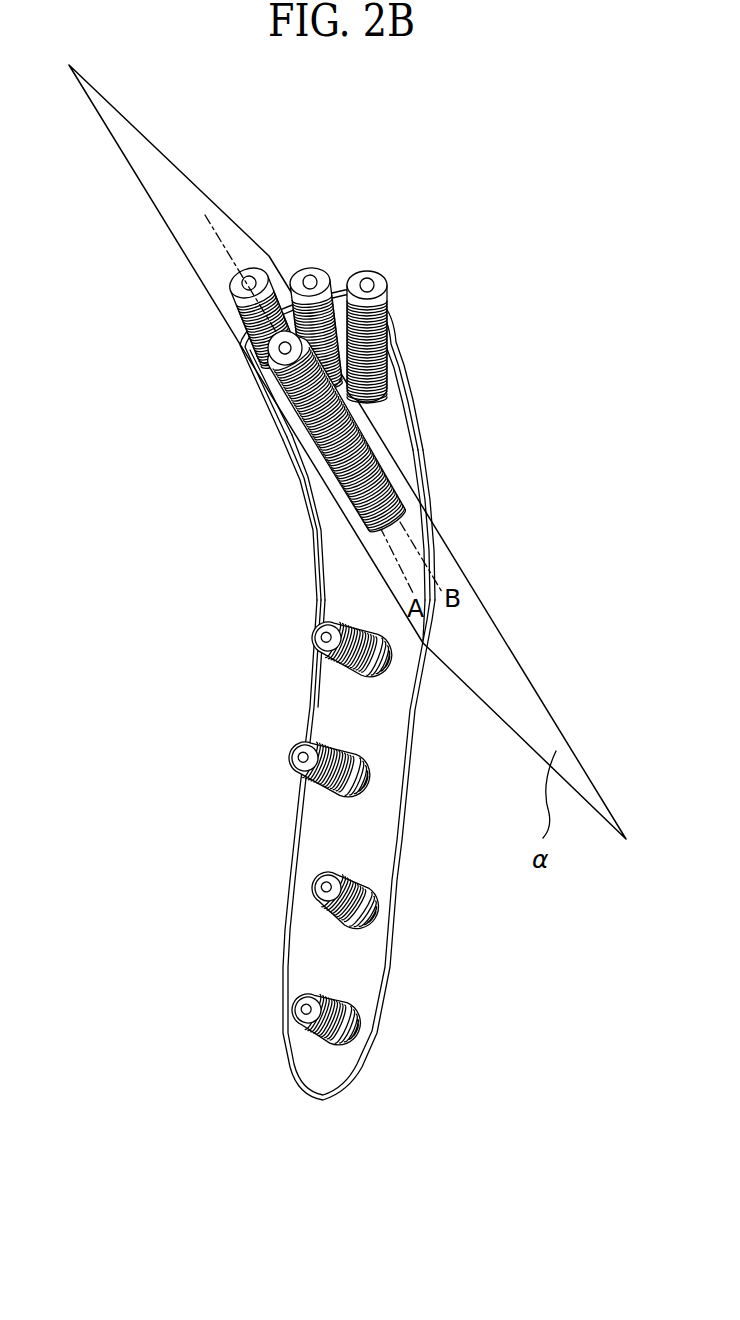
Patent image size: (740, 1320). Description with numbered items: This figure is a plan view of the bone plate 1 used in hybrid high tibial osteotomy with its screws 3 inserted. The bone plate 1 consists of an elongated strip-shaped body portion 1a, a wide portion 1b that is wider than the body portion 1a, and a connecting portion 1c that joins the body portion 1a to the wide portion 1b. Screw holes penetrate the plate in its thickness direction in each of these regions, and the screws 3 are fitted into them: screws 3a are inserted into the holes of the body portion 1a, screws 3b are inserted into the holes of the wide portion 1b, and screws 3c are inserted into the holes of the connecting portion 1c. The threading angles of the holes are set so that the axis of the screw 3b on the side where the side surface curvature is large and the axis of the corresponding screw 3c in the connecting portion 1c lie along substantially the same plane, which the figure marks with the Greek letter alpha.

The bone plate 1 is at (333, 695).
The body portion 1a is at (308, 712).
The wide portion 1b is at (238, 350).
The connecting portion 1c is at (302, 505).
The screws 3 is at (237, 633).
The screws 3a is at (325, 638).
The screws 3b is at (232, 282).
The screws 3c is at (308, 407).